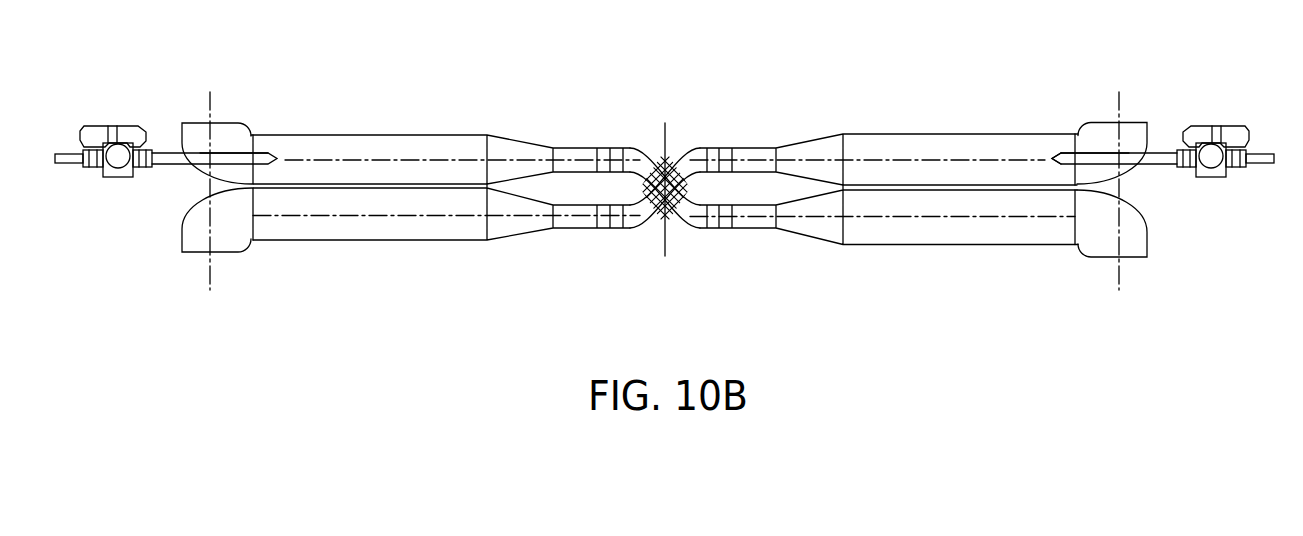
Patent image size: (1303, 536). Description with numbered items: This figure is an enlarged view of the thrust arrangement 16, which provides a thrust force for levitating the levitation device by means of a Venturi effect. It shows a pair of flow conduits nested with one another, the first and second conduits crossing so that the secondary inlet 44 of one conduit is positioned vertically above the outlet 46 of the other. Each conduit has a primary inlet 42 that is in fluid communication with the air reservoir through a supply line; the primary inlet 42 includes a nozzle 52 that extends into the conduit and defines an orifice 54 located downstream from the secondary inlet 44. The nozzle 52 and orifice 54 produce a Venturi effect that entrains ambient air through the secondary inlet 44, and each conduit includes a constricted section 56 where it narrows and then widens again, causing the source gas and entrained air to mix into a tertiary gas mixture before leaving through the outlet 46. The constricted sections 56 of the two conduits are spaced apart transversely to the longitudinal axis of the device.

The thrust arrangement 16 is at (664, 211).
The primary inlet 42 is at (207, 170).
The secondary inlet 44 is at (220, 122).
The outlet 46 is at (200, 252).
The nozzle 52 is at (217, 162).
The orifice 54 is at (1055, 157).
The constricted section 56 is at (645, 150).